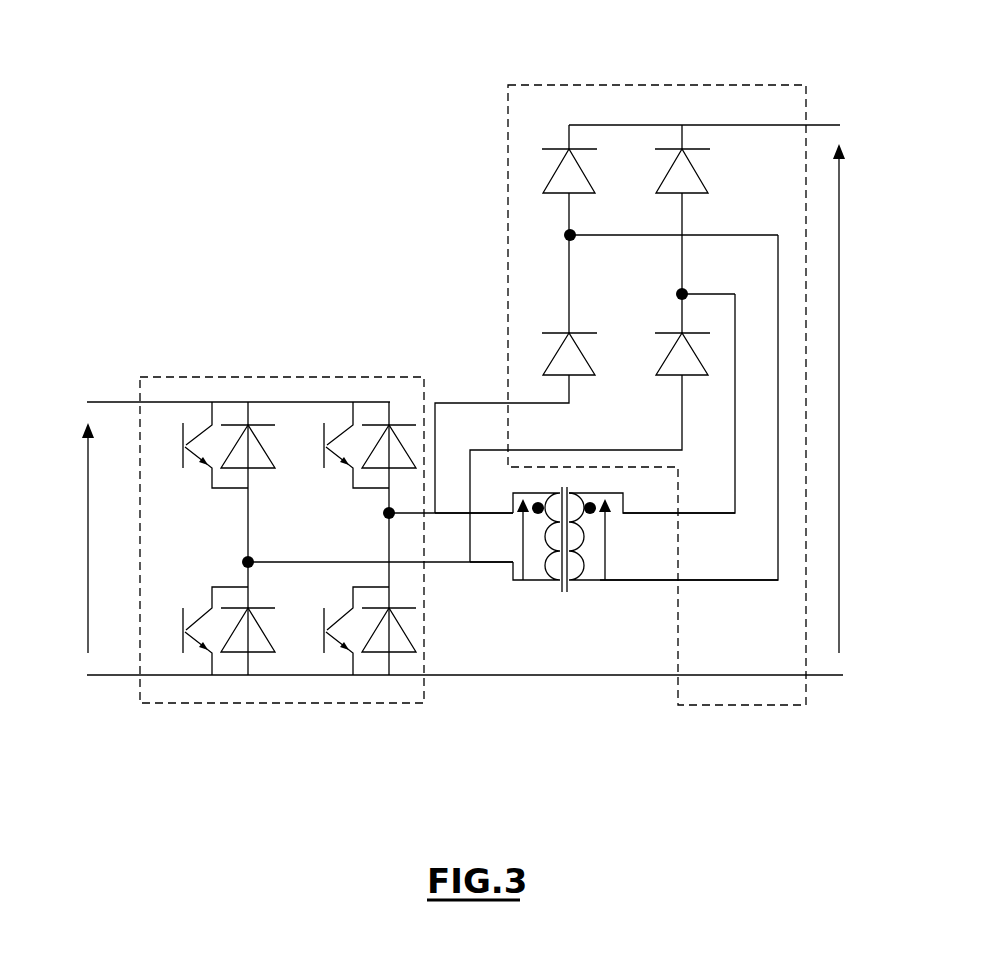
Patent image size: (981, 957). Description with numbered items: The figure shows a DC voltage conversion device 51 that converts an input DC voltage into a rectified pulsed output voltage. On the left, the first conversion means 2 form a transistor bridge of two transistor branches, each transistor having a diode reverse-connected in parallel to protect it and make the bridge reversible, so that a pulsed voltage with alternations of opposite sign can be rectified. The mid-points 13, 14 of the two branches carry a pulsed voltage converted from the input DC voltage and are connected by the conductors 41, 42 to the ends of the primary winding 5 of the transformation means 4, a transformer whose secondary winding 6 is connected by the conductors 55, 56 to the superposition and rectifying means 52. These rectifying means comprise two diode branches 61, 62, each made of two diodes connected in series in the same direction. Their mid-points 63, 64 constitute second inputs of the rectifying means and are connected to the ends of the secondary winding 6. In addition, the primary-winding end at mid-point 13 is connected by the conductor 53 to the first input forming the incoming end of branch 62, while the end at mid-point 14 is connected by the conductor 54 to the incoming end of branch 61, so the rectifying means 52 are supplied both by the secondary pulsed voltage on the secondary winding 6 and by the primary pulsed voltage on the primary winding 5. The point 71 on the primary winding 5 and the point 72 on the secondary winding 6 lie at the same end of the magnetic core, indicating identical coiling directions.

The first conversion means 2 is at (290, 703).
The transformation means 4 is at (566, 596).
The primary winding 5 is at (540, 582).
The secondary winding 6 is at (580, 582).
The mid-point 13 is at (244, 562).
The mid-point 14 is at (385, 512).
The conductor 41 is at (452, 513).
The conductor 42 is at (480, 561).
The conversion device 51 is at (334, 198).
The superposition and rectifying means 52 is at (683, 705).
The conductor 53 is at (490, 449).
The conductor 54 is at (472, 403).
The conductor 55 is at (637, 513).
The conductor 56 is at (655, 583).
The branch 61 is at (579, 96).
The branch 62 is at (682, 101).
The mid-point 63 is at (576, 237).
The mid-point 64 is at (688, 288).
The point 71 is at (538, 503).
The point 72 is at (592, 503).